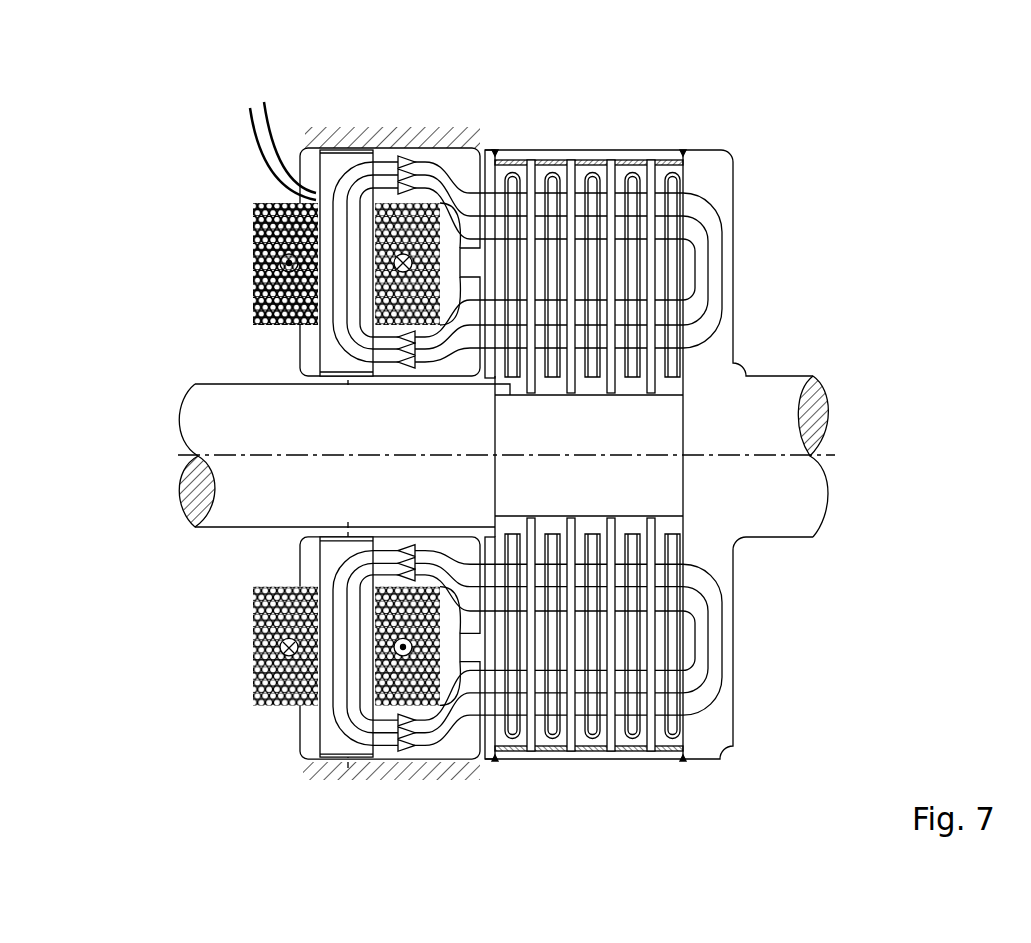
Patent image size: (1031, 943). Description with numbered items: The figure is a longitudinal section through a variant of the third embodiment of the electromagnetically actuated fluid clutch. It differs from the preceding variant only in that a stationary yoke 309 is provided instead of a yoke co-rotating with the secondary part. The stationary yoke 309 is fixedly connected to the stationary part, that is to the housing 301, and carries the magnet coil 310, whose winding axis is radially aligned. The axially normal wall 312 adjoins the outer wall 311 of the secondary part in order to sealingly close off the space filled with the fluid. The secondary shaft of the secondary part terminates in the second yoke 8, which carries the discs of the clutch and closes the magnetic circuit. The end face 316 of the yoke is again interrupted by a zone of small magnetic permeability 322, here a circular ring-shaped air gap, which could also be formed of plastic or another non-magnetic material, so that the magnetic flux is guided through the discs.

The second yoke 8 is at (710, 167).
The housing 301 is at (427, 137).
The stationary yoke 309 is at (470, 160).
The magnet coil 310 is at (275, 235).
The outer wall 311 is at (595, 153).
The axially normal wall 312 is at (490, 282).
The end face 316 is at (507, 752).
The zone of small magnetic permeability 322 is at (470, 648).